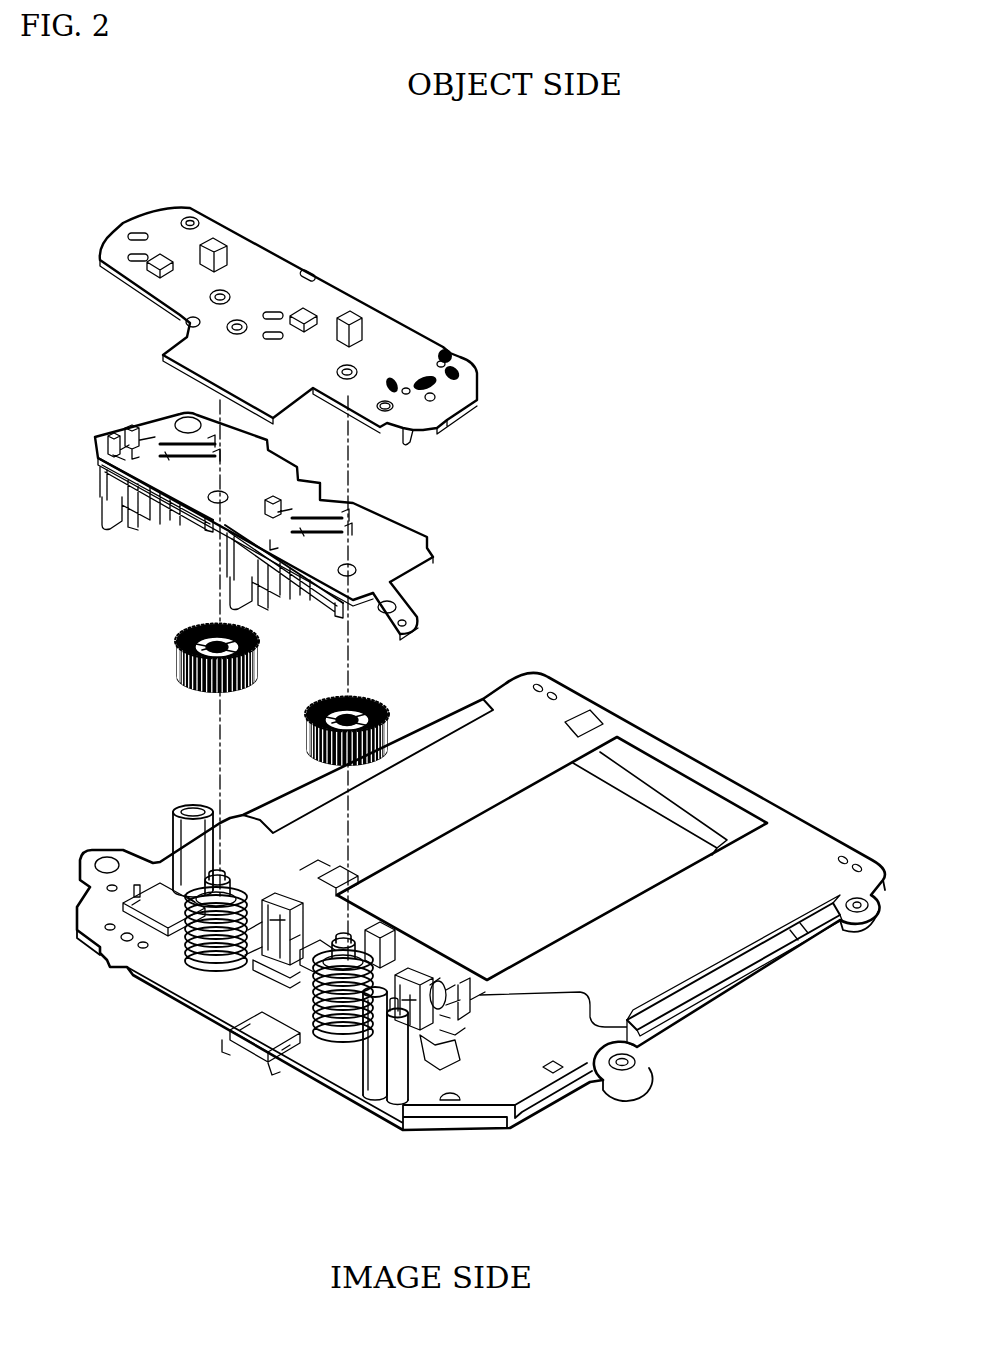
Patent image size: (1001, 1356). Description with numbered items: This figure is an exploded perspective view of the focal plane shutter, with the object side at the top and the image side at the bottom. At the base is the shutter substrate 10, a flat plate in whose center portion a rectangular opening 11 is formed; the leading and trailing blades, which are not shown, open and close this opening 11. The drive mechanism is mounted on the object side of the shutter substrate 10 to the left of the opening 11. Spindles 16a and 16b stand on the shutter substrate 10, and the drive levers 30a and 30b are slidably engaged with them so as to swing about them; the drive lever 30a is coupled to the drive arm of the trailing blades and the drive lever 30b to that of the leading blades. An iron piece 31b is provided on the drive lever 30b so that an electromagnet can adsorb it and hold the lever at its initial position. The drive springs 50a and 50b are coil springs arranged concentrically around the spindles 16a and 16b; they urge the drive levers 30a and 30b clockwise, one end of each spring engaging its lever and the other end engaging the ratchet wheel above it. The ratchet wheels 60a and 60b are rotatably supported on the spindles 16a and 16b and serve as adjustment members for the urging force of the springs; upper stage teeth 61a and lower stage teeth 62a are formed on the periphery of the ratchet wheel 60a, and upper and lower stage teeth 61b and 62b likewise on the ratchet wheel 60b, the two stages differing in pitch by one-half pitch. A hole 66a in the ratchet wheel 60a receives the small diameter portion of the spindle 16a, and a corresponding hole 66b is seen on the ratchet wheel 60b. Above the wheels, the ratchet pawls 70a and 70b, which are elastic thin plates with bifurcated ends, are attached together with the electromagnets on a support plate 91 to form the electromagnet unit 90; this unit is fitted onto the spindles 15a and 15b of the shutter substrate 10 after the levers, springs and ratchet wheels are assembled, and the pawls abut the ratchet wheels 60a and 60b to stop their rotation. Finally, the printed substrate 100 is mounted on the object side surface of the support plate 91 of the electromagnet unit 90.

The shutter substrate 10 is at (462, 934).
The opening 11 is at (617, 830).
The spindle 15a is at (167, 818).
The spindle 15b is at (375, 1075).
The spindle 16a is at (127, 968).
The spindle 16b is at (265, 1055).
The drive lever 30a is at (200, 1020).
The drive lever 30b is at (353, 1050).
The iron piece 31b is at (627, 1027).
The drive spring 50a is at (165, 1003).
The drive spring 50b is at (323, 1060).
The ratchet wheel 60a is at (170, 689).
The ratchet wheel 60b is at (349, 728).
The upper stage teeth 61a is at (178, 651).
The upper stage teeth 61b is at (309, 730).
The lower stage teeth 62a is at (180, 682).
The lower stage teeth 62b is at (318, 762).
The hole 66a is at (218, 631).
The second slit 66b is at (348, 712).
The ratchet pawl 70a is at (160, 512).
The ratchet pawl 70b is at (298, 590).
The electromagnet unit 90 is at (309, 526).
The support plate 91 is at (393, 567).
The printed substrate 100 is at (413, 323).